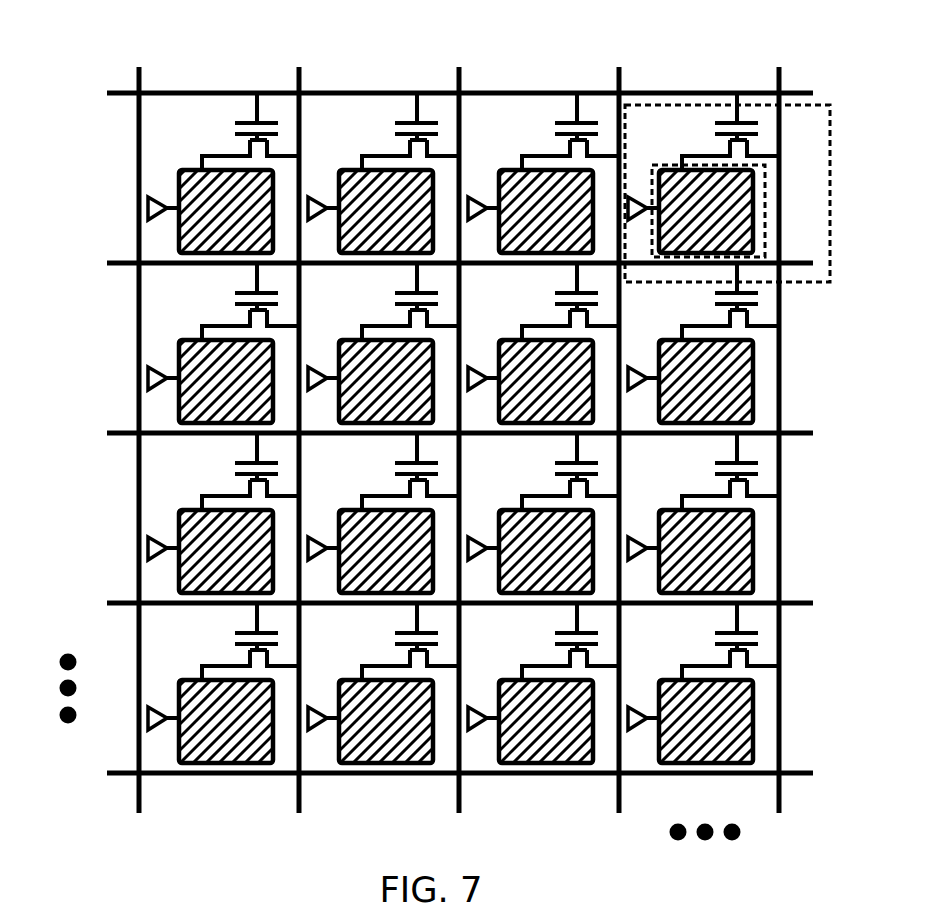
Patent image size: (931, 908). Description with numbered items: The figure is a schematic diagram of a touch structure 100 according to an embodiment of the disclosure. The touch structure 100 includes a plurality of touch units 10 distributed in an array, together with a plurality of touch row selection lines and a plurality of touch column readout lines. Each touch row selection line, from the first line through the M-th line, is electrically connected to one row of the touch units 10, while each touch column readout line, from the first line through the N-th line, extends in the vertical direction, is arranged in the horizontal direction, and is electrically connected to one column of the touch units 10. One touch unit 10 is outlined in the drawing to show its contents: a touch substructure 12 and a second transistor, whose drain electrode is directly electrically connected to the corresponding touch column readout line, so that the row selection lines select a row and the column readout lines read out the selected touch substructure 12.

The touch structure 100 is at (429, 26).
The touch unit 10 is at (708, 173).
The touch substructure 12 is at (765, 214).